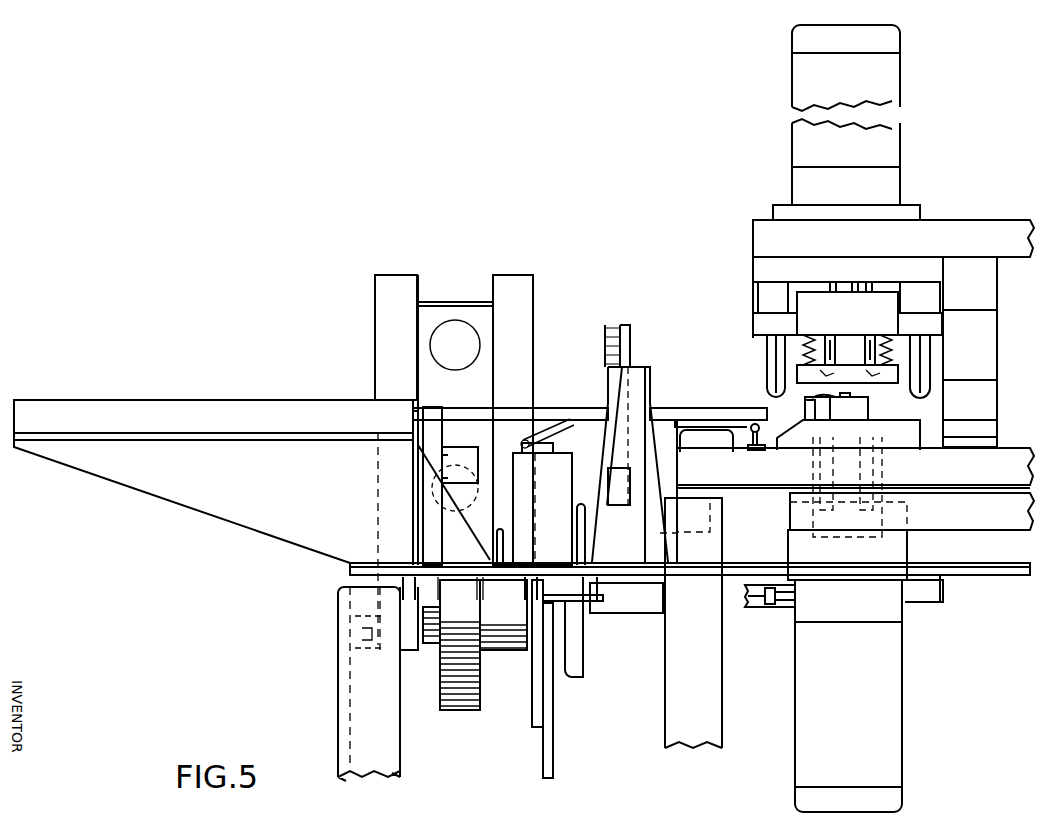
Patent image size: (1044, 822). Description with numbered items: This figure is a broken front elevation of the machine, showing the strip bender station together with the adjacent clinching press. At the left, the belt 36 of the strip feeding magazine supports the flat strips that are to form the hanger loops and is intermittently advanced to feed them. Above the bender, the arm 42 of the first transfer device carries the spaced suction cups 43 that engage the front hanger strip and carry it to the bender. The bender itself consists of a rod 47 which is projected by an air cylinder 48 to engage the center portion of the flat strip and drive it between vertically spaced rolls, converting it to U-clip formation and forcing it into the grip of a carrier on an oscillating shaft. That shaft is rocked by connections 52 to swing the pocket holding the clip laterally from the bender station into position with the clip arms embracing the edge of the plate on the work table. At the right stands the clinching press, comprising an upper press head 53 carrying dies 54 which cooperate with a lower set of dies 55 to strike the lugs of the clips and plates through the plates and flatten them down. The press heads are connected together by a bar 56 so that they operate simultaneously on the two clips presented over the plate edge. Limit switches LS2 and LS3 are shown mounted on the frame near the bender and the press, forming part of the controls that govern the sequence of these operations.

The belt 36 is at (458, 710).
The arm 42 is at (628, 368).
The suction cups 43 is at (612, 327).
The rod 47 is at (545, 408).
The air cylinder 48 is at (228, 400).
The connections 52 is at (757, 607).
The upper press head 53 is at (750, 275).
The dies 54 is at (868, 378).
The lower set of dies 55 is at (808, 398).
The bar 56 is at (970, 220).
The limit switch LS2 is at (553, 499).
The limit switch LS3 is at (855, 465).